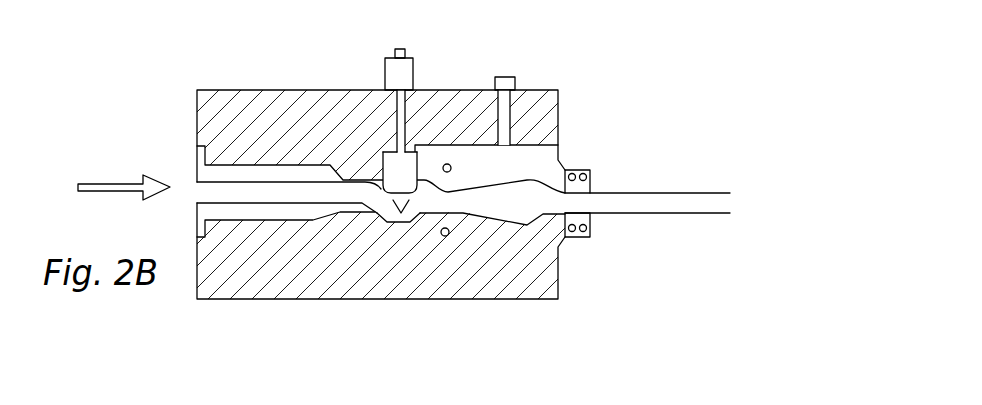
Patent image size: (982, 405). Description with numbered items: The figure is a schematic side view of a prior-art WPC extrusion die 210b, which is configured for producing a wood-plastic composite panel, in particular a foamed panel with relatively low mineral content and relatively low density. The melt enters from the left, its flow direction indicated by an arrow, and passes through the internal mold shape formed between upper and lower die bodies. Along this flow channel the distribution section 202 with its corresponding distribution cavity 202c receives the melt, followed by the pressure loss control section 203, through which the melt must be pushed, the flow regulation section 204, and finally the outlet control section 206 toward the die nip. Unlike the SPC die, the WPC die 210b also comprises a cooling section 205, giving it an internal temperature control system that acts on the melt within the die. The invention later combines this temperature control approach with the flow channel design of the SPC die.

The WPC die 210b is at (172, 73).
The distribution section 202 is at (324, 176).
The distribution cavity 202c is at (323, 213).
The pressure loss control section 203 is at (383, 204).
The flow regulation section 204 is at (403, 175).
The cooling section 205 is at (582, 172).
The outlet control section 206 is at (537, 162).